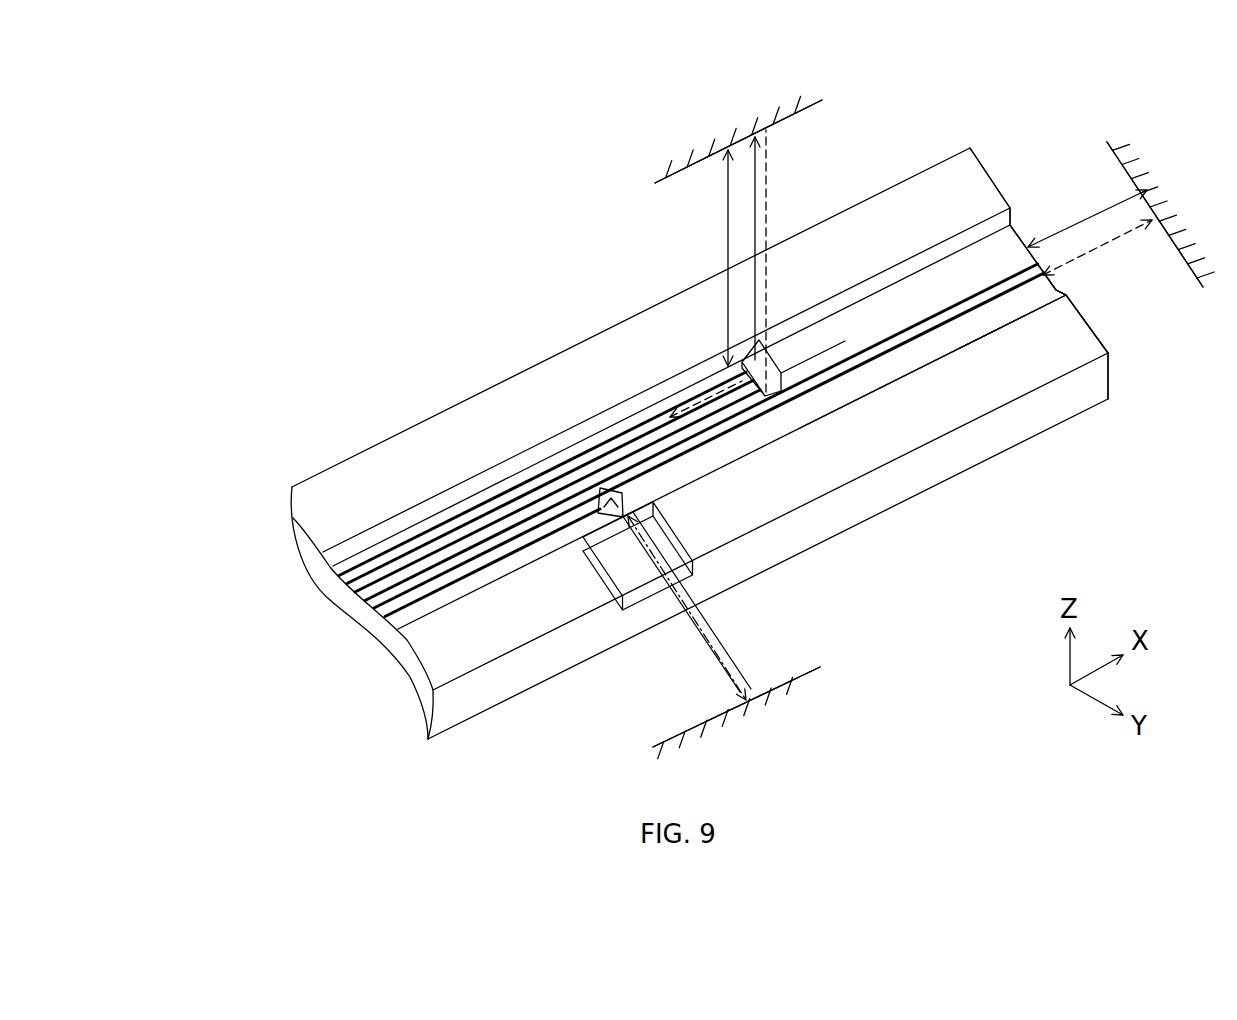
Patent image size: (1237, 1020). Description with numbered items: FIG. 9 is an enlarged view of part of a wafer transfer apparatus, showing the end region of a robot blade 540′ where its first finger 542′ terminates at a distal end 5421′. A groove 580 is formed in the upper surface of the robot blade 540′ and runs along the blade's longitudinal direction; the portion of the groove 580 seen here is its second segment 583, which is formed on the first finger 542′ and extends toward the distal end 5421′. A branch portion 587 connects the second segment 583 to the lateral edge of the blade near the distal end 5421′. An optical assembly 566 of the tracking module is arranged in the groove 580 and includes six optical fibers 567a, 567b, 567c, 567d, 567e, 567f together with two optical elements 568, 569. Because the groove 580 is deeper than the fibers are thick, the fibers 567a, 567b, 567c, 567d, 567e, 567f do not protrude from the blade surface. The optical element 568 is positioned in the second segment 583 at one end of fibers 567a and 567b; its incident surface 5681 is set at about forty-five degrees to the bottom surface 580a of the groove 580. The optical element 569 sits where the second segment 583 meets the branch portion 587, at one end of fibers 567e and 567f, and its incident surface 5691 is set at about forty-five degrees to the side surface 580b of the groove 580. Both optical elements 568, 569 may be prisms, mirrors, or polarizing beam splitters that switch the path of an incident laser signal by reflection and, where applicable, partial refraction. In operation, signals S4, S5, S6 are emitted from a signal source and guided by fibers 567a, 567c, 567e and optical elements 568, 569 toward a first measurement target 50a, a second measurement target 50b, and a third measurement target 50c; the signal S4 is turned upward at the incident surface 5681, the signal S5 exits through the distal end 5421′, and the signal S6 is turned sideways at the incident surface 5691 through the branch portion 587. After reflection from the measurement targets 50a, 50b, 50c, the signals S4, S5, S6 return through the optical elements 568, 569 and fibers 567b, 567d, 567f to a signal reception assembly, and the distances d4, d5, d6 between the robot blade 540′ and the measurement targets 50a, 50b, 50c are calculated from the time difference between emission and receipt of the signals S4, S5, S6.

The robot blade 540′ is at (498, 324).
The distal end of the first finger 5421′ is at (989, 218).
The first finger 542′ is at (1056, 357).
The optical assembly 566 is at (592, 511).
The optical fiber 567a is at (339, 576).
The optical fiber 567b is at (348, 584).
The optical fiber 567c is at (356, 592).
The optical fiber 567d is at (366, 601).
The optical fiber 567e is at (375, 609).
The optical fiber 567f is at (386, 618).
The optical element 568 is at (818, 356).
The incident surface 5681 is at (760, 350).
The optical element 569 is at (625, 493).
The incident surface 5691 is at (633, 500).
The groove 580 is at (940, 290).
The bottom surface of the groove 580a is at (893, 362).
The side surface of the groove 580b is at (839, 409).
The second segment 583 is at (980, 335).
The branch portion 587 is at (603, 570).
The first measurement target 50a is at (681, 165).
The second measurement target 50b is at (1188, 264).
The third measurement target 50c is at (793, 678).
The signal S4 is at (725, 147).
The signal S5 is at (1146, 198).
The signal S6 is at (703, 668).
The distance d4 is at (710, 258).
The distance d5 is at (1090, 229).
The distance d6 is at (695, 608).